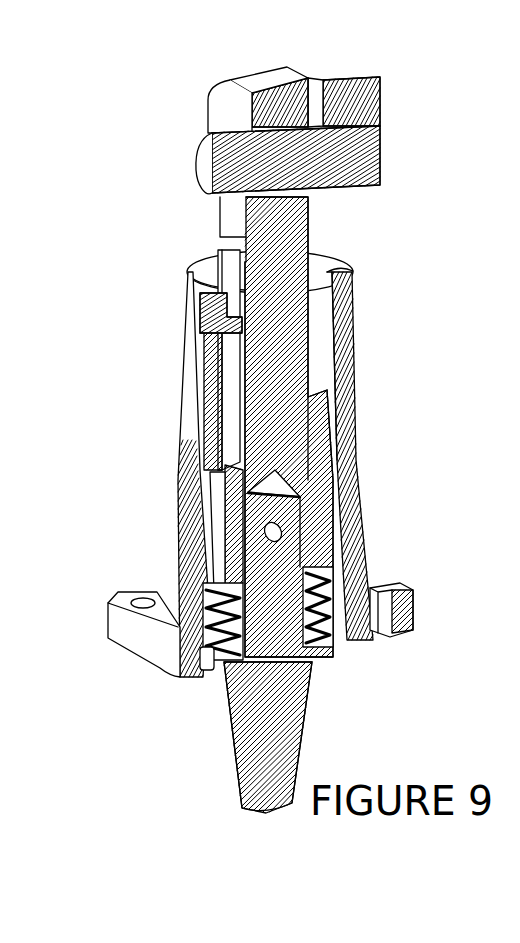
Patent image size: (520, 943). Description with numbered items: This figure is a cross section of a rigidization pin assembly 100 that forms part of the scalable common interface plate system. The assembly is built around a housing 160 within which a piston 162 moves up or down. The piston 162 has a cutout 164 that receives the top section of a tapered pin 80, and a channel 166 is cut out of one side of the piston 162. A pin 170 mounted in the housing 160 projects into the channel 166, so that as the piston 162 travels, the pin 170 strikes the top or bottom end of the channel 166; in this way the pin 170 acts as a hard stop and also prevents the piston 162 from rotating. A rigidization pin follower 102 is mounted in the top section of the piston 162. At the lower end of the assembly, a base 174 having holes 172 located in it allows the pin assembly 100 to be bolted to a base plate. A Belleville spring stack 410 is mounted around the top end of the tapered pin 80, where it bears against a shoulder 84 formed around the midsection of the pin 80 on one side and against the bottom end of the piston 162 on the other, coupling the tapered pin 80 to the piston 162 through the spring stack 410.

The rigidization pin assembly 100 is at (440, 203).
The rigidization pin follower 102 is at (383, 150).
The piston 162 is at (310, 213).
The housing 160 is at (187, 457).
The pin 170 is at (203, 330).
The channel 166 is at (235, 383).
The cutout 164 is at (300, 497).
The Belleville spring stack 410 is at (340, 585).
The holes 172 is at (142, 598).
The base 174 is at (155, 637).
The shoulder 84 is at (215, 672).
The tapered pin 80 is at (313, 720).